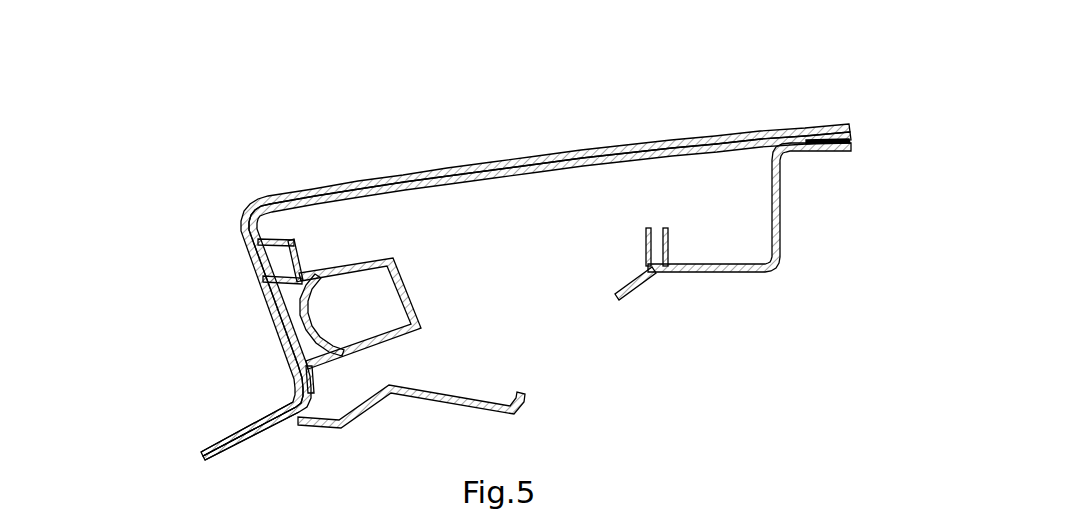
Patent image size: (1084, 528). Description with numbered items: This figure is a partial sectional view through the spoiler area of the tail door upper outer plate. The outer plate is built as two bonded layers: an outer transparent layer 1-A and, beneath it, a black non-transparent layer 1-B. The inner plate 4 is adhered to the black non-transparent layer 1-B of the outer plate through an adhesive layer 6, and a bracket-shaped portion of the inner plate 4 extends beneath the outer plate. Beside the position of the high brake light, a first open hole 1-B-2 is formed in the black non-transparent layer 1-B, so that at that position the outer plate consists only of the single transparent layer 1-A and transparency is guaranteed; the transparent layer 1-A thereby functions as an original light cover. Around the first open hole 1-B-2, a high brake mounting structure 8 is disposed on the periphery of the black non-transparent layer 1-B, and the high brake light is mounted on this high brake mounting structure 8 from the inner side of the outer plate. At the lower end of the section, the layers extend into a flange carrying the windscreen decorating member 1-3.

The transparent layer 1-A is at (525, 251).
The black non-transparent layer 1-B is at (530, 244).
The first open hole 1-B-2 is at (220, 211).
The windscreen decorating member 1-3 is at (173, 415).
The high brake mounting structure 8 is at (369, 236).
The inner plate 4 is at (756, 221).
The adhesive layer 6 is at (875, 101).